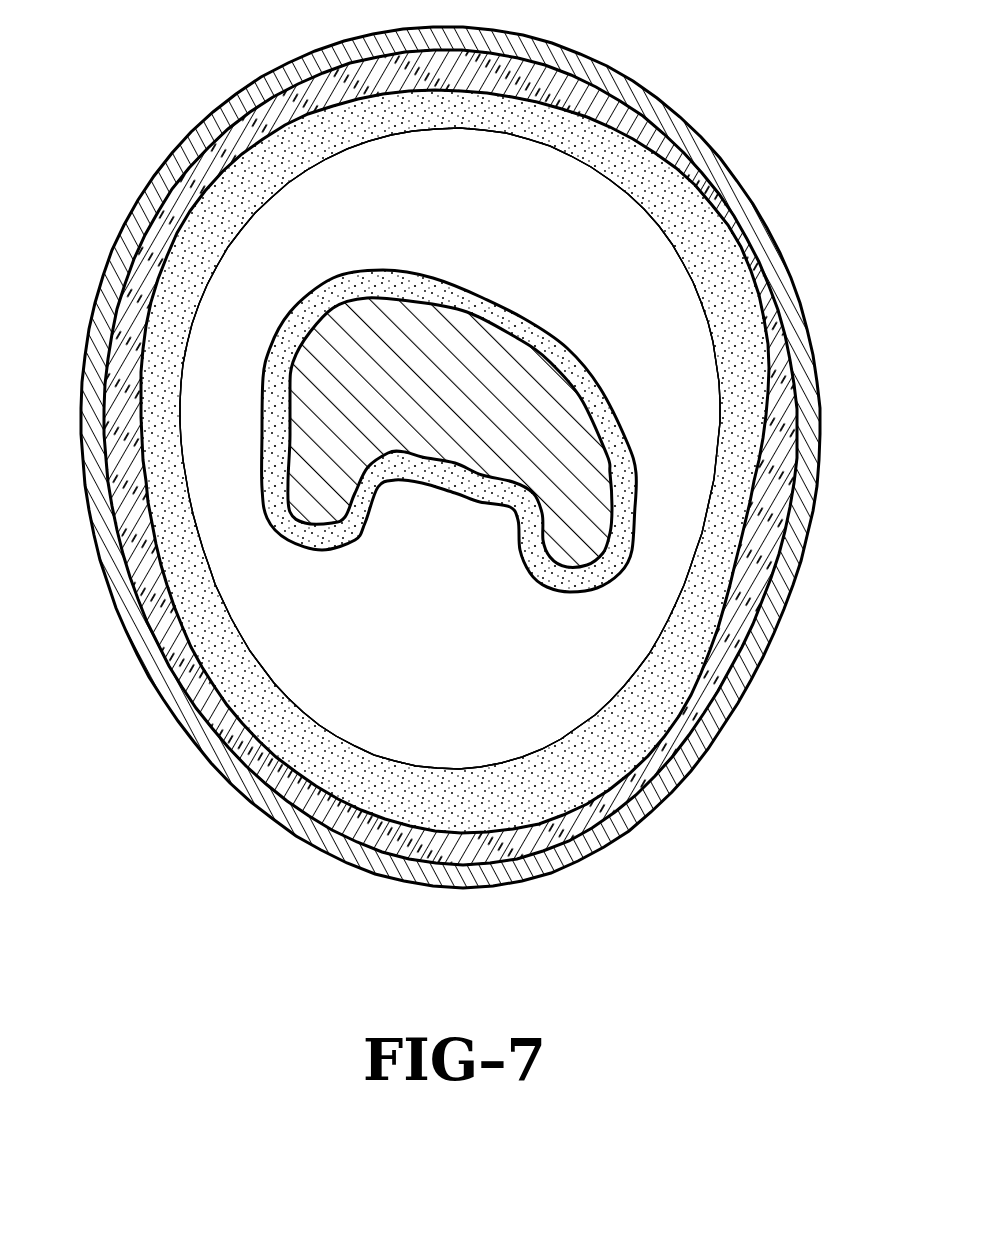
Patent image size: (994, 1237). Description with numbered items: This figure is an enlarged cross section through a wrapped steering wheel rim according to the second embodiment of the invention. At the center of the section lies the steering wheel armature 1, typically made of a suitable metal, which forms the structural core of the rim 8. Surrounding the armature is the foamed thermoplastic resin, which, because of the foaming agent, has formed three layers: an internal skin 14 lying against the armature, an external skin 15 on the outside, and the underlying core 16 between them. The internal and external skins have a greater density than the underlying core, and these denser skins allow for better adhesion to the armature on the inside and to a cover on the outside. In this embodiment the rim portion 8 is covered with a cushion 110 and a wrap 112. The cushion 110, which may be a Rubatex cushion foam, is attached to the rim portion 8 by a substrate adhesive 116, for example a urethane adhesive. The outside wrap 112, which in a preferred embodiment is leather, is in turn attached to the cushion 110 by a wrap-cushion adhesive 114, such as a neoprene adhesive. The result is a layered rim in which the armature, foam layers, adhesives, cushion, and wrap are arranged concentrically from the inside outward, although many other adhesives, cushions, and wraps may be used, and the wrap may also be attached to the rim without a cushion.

The steering wheel armature 1 is at (577, 520).
The rim 8 is at (170, 250).
The internal skin 14 is at (597, 393).
The external skin 15 is at (597, 148).
The underlying core 16 is at (310, 220).
The cushion 110 is at (498, 847).
The wrap 112 is at (190, 733).
The wrap-cushion adhesive 114 is at (298, 820).
The substrate adhesive 116 is at (615, 772).